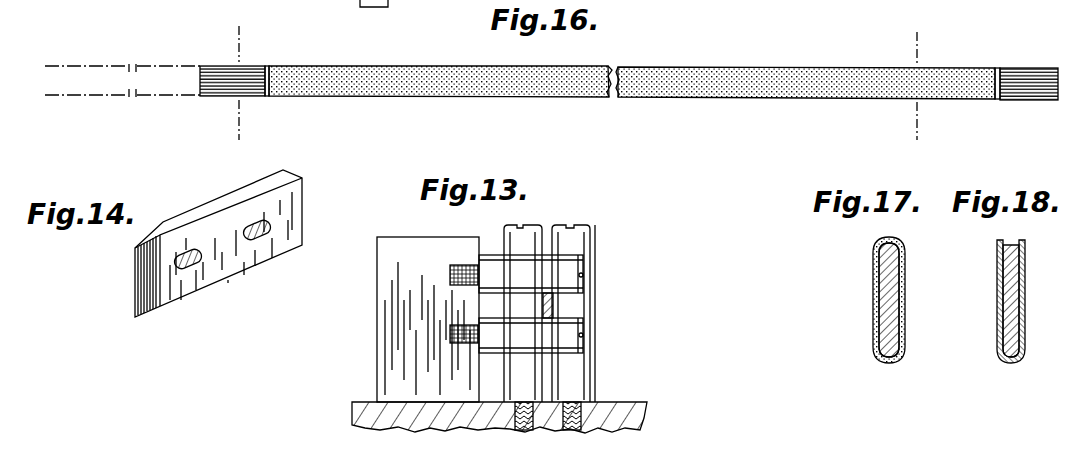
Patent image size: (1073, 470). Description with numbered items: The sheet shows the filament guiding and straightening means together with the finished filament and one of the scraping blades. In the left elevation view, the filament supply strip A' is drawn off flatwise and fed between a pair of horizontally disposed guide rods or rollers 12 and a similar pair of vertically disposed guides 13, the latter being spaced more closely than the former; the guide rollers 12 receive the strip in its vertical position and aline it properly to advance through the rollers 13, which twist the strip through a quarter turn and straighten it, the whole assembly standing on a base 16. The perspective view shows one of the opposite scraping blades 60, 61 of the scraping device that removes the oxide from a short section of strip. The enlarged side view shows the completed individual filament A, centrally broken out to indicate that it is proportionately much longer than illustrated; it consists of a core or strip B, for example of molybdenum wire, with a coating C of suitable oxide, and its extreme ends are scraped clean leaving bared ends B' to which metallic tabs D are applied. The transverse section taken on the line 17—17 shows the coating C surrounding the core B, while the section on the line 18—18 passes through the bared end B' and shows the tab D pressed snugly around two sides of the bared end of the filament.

In FIG. 16, the filament A is at (801, 69).
In FIG. 16, the coating C is at (398, 75).
In FIG. 17, the coating C is at (875, 316).
In FIG. 17, the core or strip B is at (871, 300).
In FIG. 18, the core or strip B is at (991, 301).
In FIG. 16, the bared ends B' is at (644, 64).
In FIG. 16, the metallic tabs D is at (221, 70).
In FIG. 18, the metallic tabs D is at (1002, 322).
In FIG. 16, the section line 17- 17 is at (917, 84).
In FIG. 16, the section line 18- 18 is at (240, 83).
In FIG. 14, the scraping blade 60 is at (163, 300).
In FIG. 14, the scraping blade 61 is at (222, 281).
In FIG. 13, the horizontally disposed guide rods or rollers 12 is at (490, 292).
In FIG. 13, the vertically disposed guides 13 is at (527, 240).
In FIG. 13, the supply strip A' is at (548, 304).
In FIG. 13, the base / ground 16 is at (612, 402).